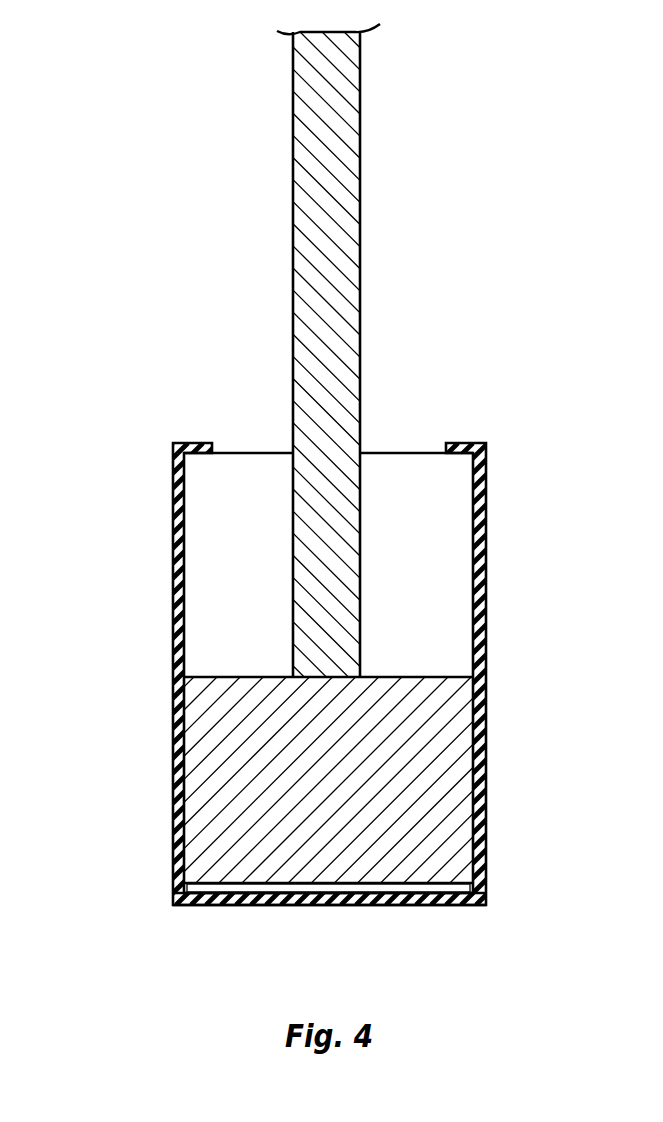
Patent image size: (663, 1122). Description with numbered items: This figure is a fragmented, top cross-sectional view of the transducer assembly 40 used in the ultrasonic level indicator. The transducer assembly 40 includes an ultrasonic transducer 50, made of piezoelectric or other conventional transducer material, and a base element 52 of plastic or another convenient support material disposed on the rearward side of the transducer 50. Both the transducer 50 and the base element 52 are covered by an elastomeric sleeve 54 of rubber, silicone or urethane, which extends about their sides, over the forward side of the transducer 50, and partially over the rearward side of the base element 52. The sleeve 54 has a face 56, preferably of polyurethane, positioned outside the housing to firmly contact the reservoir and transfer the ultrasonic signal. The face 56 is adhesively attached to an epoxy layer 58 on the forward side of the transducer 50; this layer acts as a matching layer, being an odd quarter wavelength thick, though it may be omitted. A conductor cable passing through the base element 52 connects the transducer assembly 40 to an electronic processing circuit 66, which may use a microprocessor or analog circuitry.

The transducer assembly 40 is at (146, 620).
The electronic processing circuit 66 is at (350, 245).
The base element 52 is at (428, 547).
The elastomeric sleeve 54 is at (486, 630).
The ultrasonic transducer 50 is at (462, 825).
The epoxy layer 58 is at (463, 890).
The face 56 is at (323, 905).